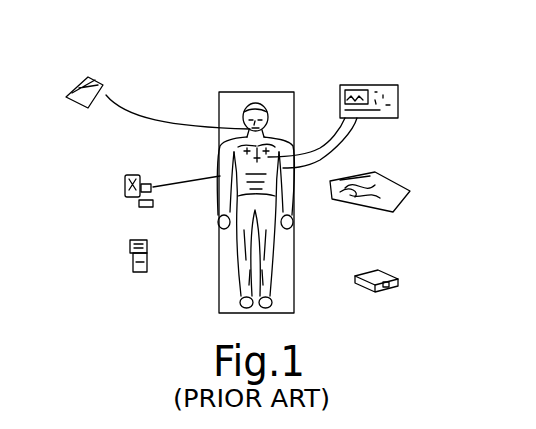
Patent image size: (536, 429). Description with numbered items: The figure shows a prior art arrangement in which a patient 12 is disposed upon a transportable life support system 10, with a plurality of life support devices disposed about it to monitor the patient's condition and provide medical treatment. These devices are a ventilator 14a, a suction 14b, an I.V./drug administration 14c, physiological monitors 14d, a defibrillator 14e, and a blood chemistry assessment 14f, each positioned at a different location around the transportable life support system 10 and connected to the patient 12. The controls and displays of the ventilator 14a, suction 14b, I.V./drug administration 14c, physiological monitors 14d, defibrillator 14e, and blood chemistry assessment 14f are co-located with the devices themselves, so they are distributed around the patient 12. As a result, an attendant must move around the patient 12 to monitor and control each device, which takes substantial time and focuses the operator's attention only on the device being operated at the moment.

The transportable life support system 10 is at (218, 278).
The patient 12 is at (270, 112).
The ventilator 14a is at (69, 83).
The suction 14b is at (123, 189).
The I.V./drug administration 14c is at (130, 248).
The physiological monitors 14d is at (398, 106).
The defibrillator 14e is at (398, 183).
The blood chemistry assessment 14f is at (398, 287).